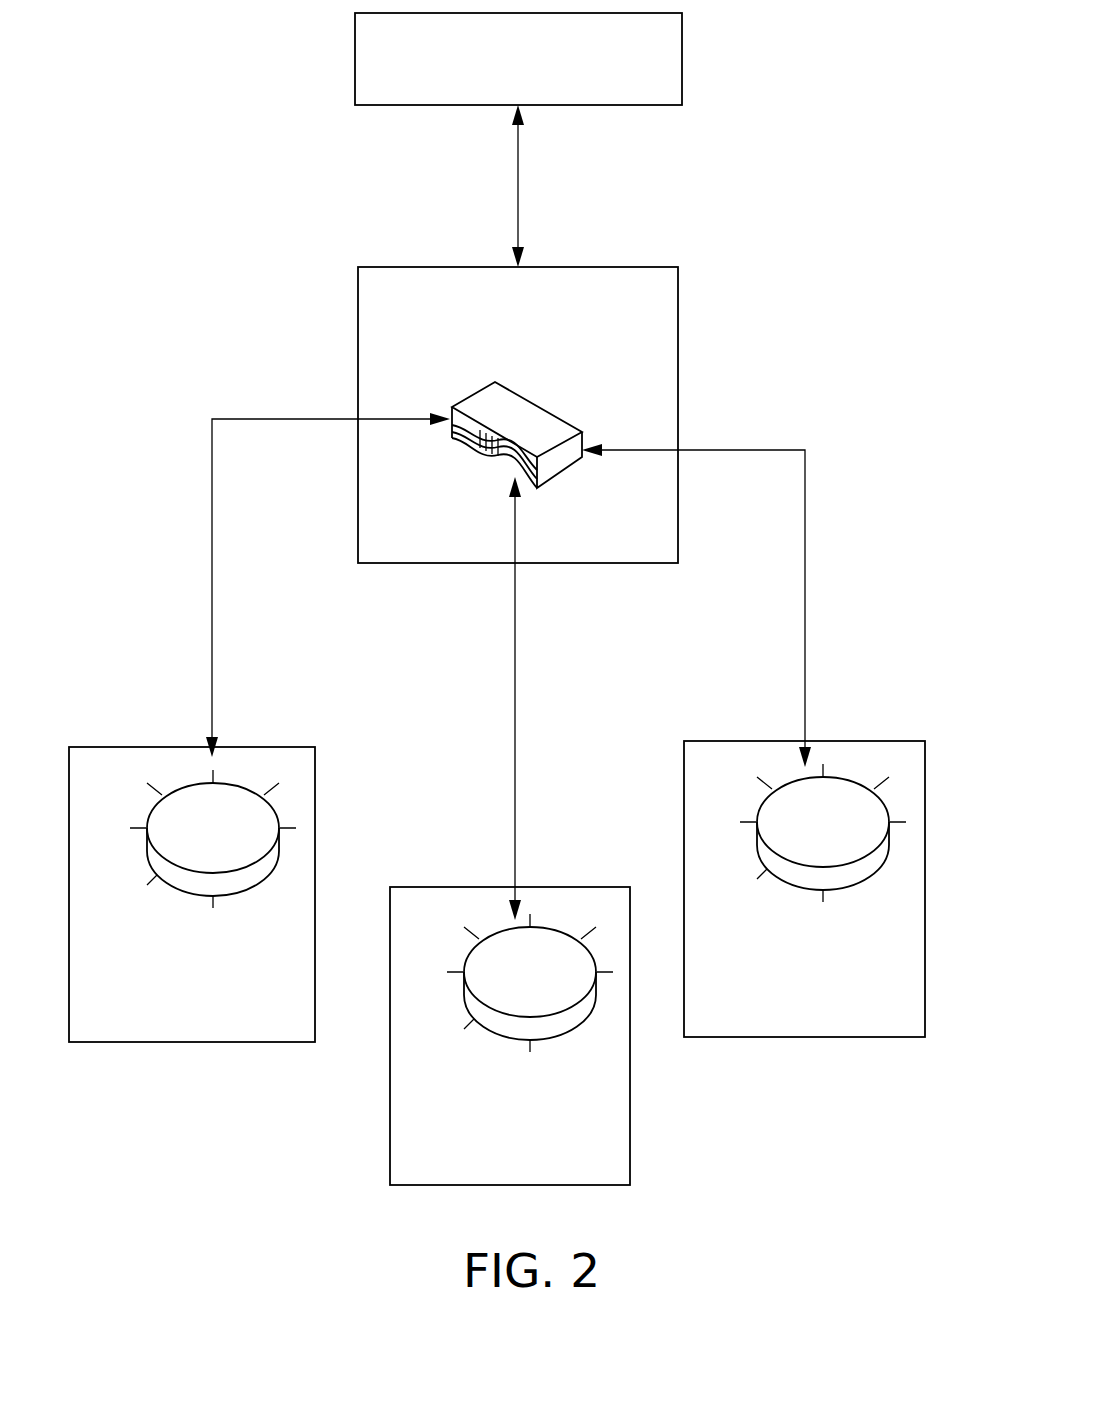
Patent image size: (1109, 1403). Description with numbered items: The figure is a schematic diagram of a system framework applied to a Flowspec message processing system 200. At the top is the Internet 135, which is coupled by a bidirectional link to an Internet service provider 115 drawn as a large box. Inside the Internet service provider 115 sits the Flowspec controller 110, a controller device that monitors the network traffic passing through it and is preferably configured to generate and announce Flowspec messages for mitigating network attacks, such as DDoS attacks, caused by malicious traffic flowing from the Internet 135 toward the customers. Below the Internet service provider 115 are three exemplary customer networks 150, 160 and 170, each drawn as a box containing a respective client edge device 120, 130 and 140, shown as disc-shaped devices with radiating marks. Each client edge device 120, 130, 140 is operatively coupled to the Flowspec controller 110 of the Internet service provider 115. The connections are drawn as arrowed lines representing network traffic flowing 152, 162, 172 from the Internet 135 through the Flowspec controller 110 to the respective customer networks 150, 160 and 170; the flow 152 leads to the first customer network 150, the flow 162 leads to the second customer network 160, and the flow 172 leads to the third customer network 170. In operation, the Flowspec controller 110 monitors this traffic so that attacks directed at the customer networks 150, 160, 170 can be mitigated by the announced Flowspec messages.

The Internet 135 is at (355, 58).
The Internet service provider 115 is at (358, 293).
The Flowspec controller 110 is at (530, 395).
The Flowspec message processing system 200 is at (715, 220).
The network traffic flow 172 is at (212, 635).
The network traffic flow 162 is at (805, 568).
The network traffic flow 152 is at (515, 700).
The customer network 170 is at (277, 747).
The client edge device 140 is at (173, 890).
The customer network 150 is at (562, 887).
The client edge device 120 is at (550, 1040).
The customer network 160 is at (893, 741).
The client edge device 130 is at (847, 890).